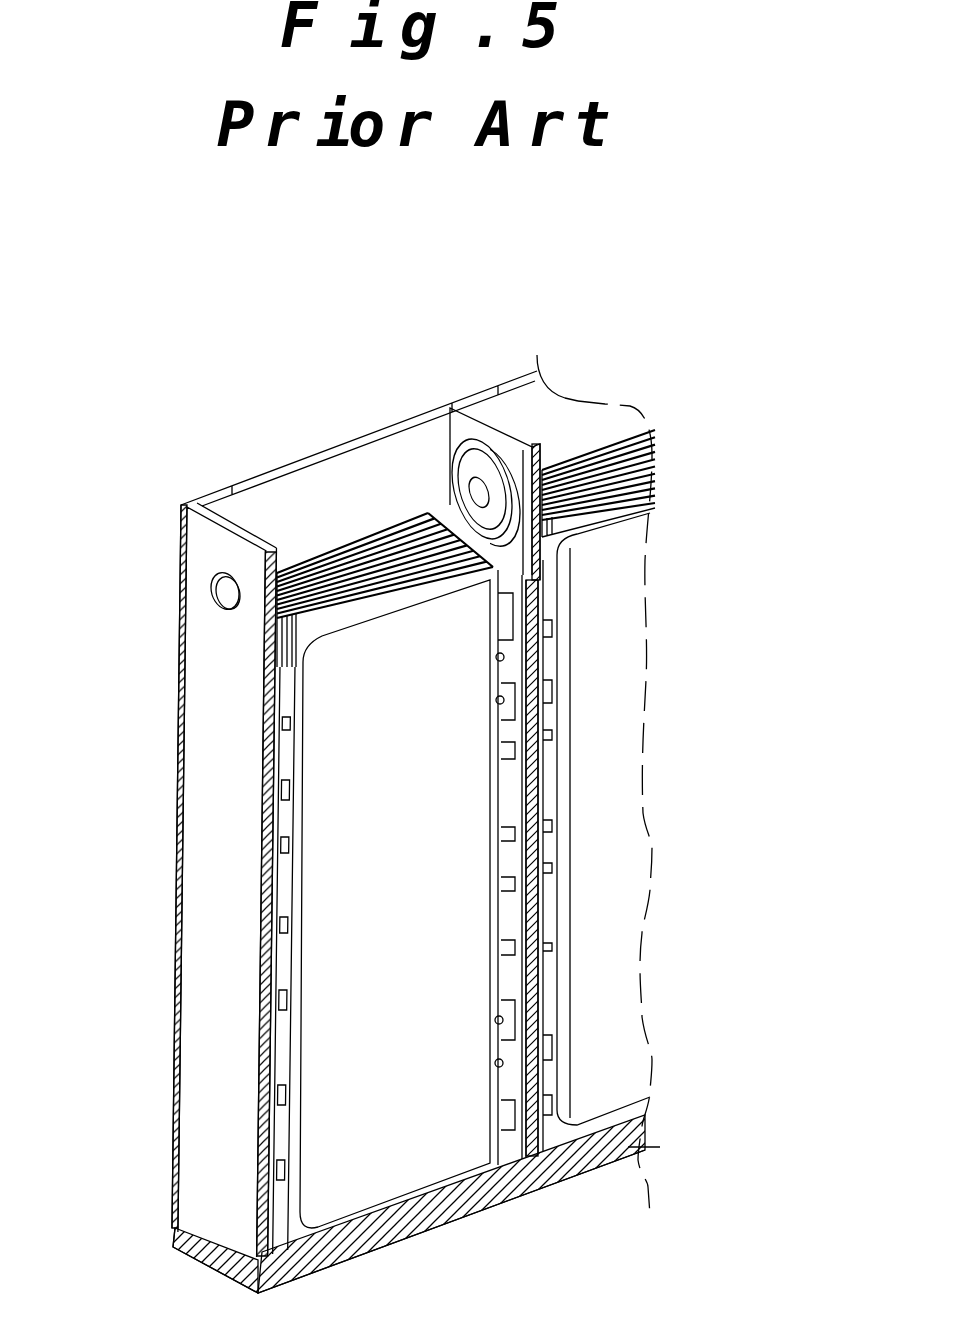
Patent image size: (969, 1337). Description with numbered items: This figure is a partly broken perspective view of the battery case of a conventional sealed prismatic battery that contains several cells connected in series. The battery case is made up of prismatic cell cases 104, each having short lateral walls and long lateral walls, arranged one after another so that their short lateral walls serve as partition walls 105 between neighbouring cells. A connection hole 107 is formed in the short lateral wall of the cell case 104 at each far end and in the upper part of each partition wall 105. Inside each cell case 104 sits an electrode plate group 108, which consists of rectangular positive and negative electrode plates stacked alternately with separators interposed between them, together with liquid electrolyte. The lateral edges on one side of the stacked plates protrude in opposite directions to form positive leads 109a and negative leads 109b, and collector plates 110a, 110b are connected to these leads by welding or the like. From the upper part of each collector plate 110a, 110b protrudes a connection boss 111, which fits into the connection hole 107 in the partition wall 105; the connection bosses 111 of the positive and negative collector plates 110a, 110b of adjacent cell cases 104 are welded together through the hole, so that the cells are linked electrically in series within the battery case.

The cell case 104 is at (334, 530).
The partition wall 105 is at (263, 917).
The connection hole 107 is at (214, 608).
The electrode plate group 108 is at (418, 1063).
The positive lead 109a is at (288, 886).
The negative lead 109b is at (494, 760).
The positive collector plate 110a is at (287, 866).
The negative collector plate 110b is at (502, 724).
The connection boss 111 is at (470, 490).